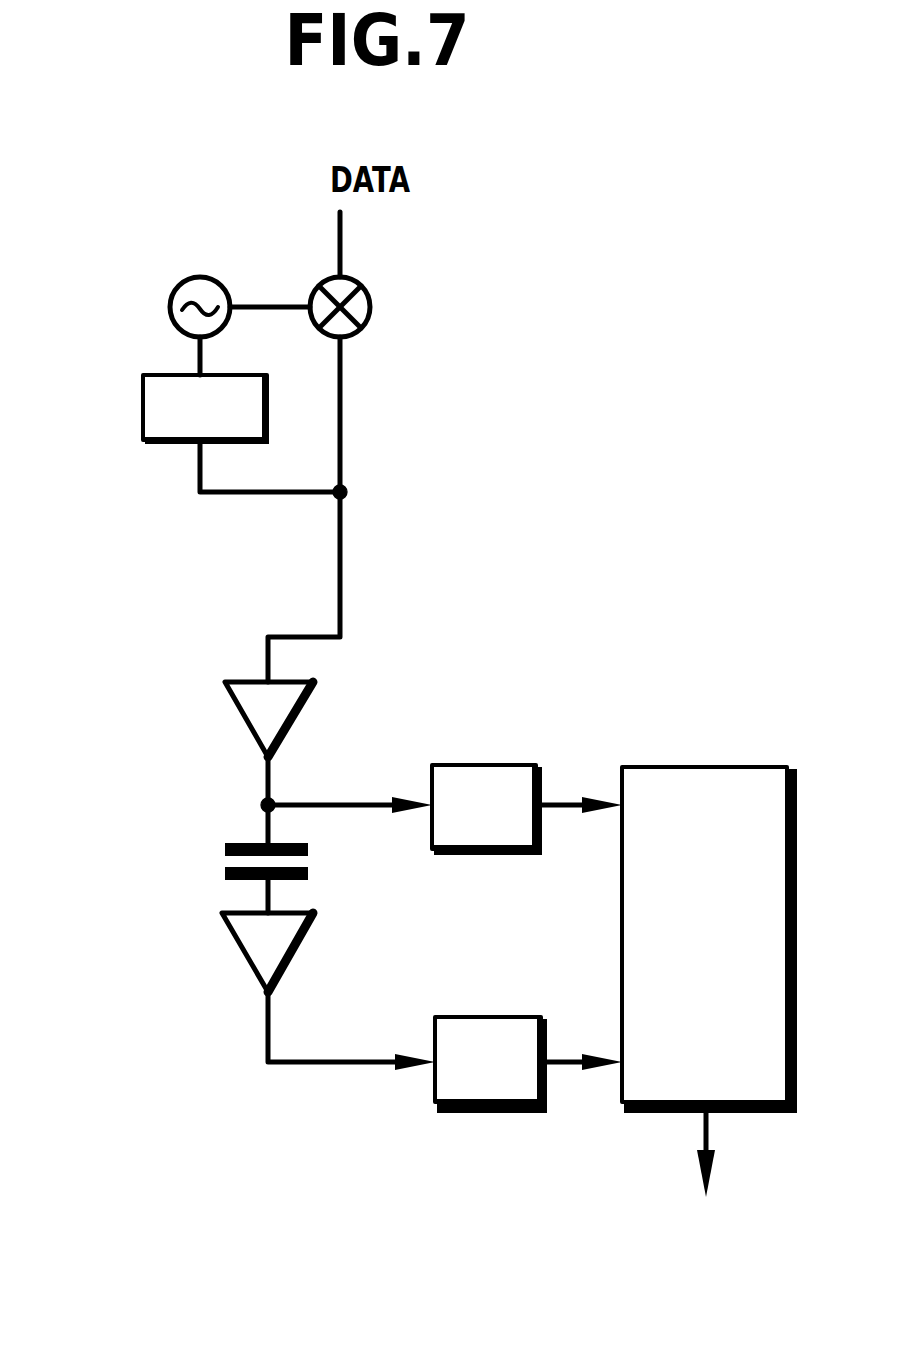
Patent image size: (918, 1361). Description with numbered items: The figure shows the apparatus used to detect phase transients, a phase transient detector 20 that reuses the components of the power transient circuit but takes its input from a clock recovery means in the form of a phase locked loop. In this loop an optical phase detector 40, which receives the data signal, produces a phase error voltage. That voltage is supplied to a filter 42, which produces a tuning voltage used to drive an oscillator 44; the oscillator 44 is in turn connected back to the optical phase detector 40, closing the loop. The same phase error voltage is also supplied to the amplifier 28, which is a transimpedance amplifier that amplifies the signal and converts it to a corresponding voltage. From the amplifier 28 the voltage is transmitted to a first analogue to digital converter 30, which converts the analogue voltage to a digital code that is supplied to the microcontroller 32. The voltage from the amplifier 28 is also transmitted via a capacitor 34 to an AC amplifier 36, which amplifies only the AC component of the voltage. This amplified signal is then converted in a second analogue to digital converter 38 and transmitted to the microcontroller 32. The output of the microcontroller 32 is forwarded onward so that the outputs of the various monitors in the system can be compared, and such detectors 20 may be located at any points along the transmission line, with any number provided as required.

The detector 20 is at (265, 1180).
The transimpedance amplifier 28 is at (250, 707).
The first analogue to digital converter 30 is at (482, 856).
The microcontroller 32 is at (636, 1000).
The capacitor 34 is at (220, 860).
The AC amplifier 36 is at (265, 950).
The second analogue to digital converter 38 is at (513, 1093).
The optical phase detector 40 is at (363, 308).
The filter 42 is at (168, 436).
The oscillator 44 is at (198, 282).